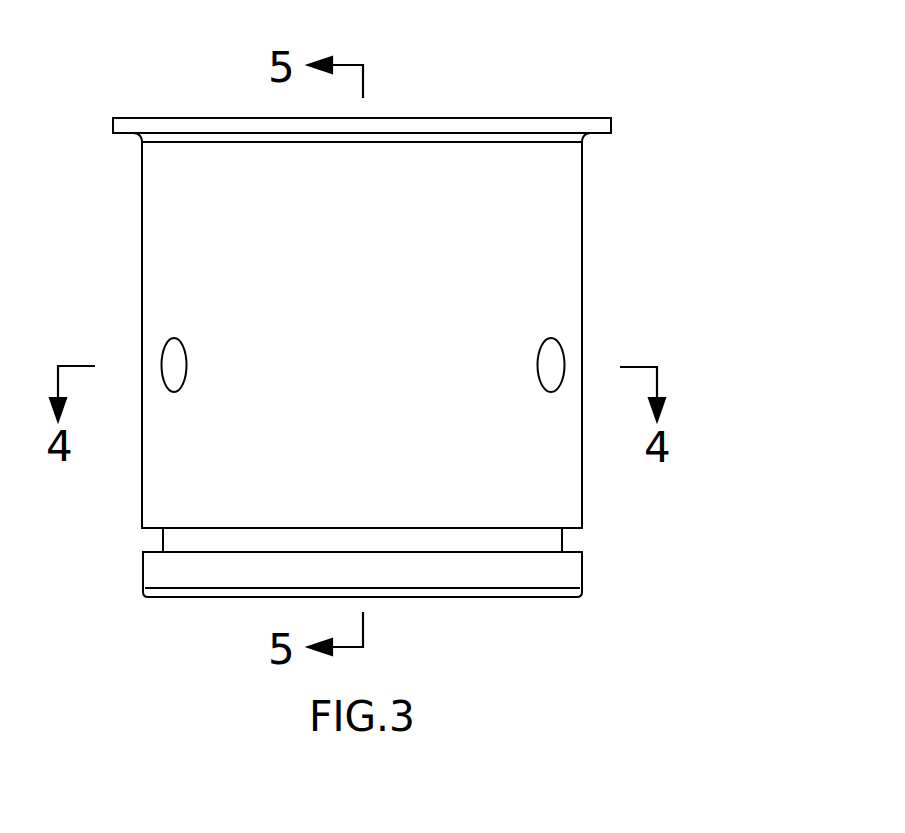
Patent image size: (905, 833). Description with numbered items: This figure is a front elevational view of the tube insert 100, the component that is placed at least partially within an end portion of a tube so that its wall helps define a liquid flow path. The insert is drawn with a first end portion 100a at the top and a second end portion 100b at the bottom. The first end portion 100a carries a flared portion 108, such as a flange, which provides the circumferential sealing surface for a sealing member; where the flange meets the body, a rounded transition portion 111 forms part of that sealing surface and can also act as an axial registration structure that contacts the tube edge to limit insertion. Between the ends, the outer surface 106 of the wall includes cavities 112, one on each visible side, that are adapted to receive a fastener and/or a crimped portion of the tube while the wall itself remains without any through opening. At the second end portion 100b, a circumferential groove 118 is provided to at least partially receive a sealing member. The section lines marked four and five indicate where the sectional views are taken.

The tube insert 100 is at (420, 315).
The first end portion 100a is at (420, 289).
The second end portion 100b is at (597, 575).
The outer surface 106 is at (497, 242).
The flared portion 108 is at (568, 124).
The transition portion 111 is at (139, 135).
The cavity 112 is at (551, 388).
The circumferential groove 118 is at (568, 553).